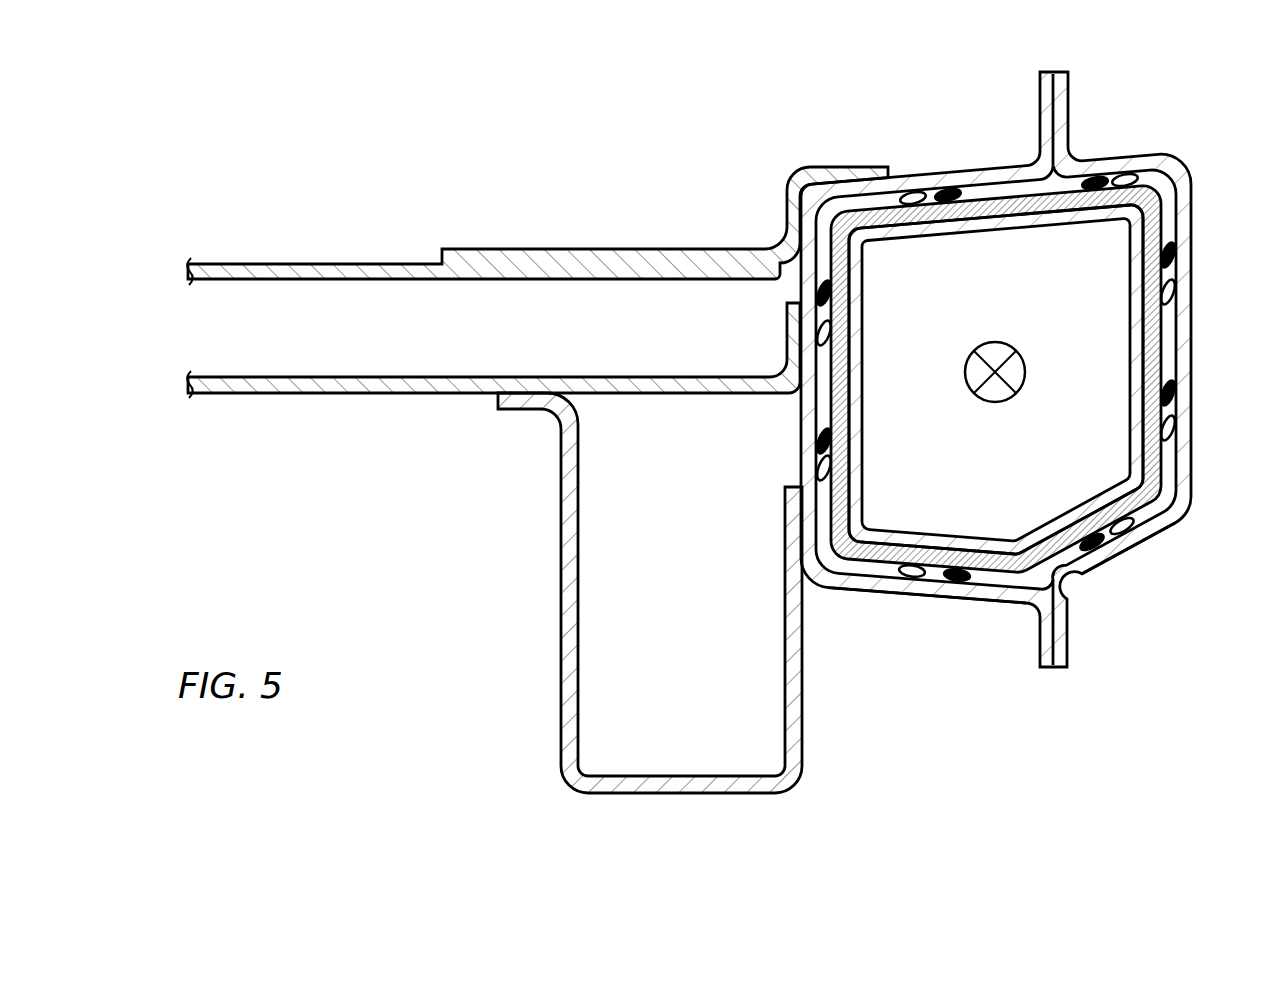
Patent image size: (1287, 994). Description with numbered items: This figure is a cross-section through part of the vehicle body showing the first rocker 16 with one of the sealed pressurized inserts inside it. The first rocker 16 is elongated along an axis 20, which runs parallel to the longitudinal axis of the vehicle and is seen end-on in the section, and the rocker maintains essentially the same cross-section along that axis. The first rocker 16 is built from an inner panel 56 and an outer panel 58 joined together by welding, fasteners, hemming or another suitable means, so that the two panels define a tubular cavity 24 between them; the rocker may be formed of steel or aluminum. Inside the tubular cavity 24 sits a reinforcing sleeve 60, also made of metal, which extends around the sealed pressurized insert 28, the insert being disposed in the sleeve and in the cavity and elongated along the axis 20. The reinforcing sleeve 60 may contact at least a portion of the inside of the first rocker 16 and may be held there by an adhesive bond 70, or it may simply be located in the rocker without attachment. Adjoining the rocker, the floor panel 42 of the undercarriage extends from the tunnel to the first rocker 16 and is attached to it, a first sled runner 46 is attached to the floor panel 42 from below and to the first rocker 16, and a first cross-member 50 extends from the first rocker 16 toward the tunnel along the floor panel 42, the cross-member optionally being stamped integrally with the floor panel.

The first rocker 16 is at (1037, 369).
The axis 20 is at (990, 403).
The tubular cavity 24 is at (1130, 192).
The sealed pressurized insert 28 is at (1162, 345).
The floor panel 42 is at (340, 394).
The first sled runner 46 is at (716, 794).
The first cross-member 50 is at (342, 262).
The inner panel 56 is at (948, 596).
The outer panel 58 is at (1150, 545).
The reinforcing sleeve 60 is at (1193, 215).
The adhesive bond 70 is at (912, 565).